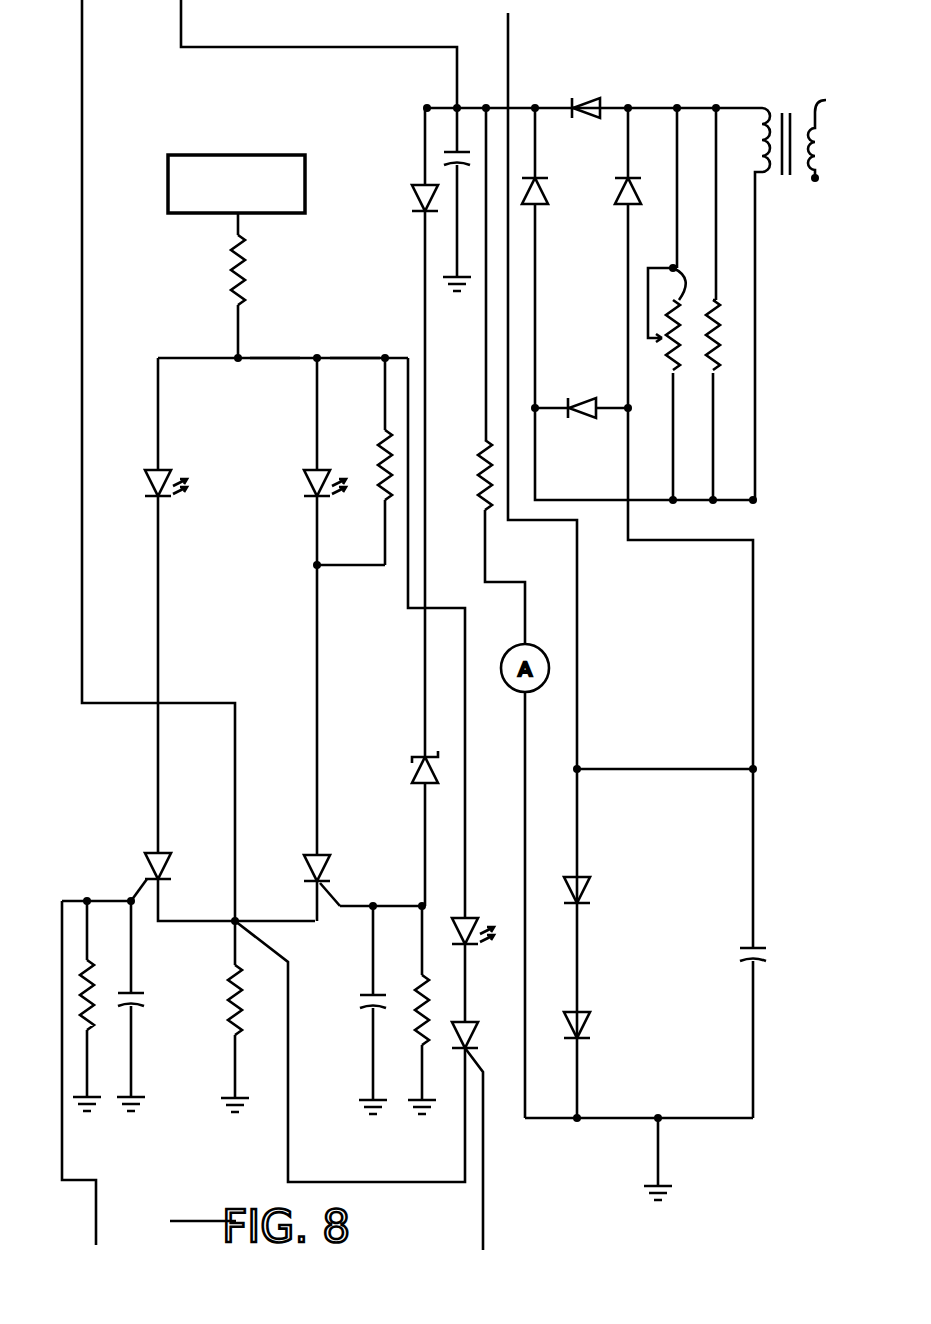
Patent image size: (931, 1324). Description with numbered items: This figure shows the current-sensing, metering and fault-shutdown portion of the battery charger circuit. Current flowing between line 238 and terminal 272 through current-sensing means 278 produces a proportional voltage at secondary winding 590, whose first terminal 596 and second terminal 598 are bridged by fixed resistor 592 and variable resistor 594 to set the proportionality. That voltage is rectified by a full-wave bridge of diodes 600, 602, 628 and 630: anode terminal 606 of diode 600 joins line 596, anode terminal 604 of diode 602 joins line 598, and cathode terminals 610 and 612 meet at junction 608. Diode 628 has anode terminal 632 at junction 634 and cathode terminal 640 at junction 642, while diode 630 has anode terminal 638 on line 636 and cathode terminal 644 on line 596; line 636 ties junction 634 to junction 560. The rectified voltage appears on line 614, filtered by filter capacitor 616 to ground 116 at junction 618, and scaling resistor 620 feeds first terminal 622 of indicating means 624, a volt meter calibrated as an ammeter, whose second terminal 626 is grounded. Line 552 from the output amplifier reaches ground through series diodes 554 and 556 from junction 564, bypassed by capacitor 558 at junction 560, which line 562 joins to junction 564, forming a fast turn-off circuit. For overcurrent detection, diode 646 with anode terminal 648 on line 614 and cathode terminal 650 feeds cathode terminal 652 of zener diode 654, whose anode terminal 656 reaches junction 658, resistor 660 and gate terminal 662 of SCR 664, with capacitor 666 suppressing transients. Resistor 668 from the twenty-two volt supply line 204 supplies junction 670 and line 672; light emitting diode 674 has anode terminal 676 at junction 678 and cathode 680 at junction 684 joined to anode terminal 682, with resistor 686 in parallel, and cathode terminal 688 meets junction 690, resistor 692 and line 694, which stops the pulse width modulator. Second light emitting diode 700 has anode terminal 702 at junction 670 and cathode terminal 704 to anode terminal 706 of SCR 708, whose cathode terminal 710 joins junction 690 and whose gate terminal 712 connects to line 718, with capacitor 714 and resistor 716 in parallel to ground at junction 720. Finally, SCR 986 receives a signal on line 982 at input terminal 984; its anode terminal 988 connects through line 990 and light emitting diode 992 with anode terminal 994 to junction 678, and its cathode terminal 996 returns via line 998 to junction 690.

The line 694 is at (84, 126).
The line 614 is at (256, 46).
The 22 volt line 204 is at (296, 155).
The resistor 668 is at (226, 270).
The junction 670 is at (236, 356).
The line 672 is at (270, 356).
The junction 678 is at (330, 356).
The anode terminal 702 is at (160, 412).
The second light emitting diode 700 is at (162, 468).
The cathode terminal 704 is at (160, 590).
The anode terminal 706 is at (160, 816).
The SCR 708 is at (150, 868).
The cathode terminal 710 is at (170, 920).
The anode terminal 676 is at (320, 416).
The light emitting diode 674 is at (305, 482).
The cathode 680 is at (315, 534).
The junction 684 is at (316, 566).
The resistor 686 is at (383, 466).
The anode terminal 682 is at (313, 760).
The junction 690 is at (238, 920).
The cathode terminal 688 is at (317, 922).
The junction 618 is at (455, 104).
The filter capacitor 616 is at (426, 148).
The diode 646 is at (412, 200).
The cathode terminal 650 is at (424, 258).
The cathode terminal 652 is at (424, 668).
The zener diode 654 is at (415, 772).
The anode terminal 656 is at (424, 806).
The SCR 664 is at (330, 862).
The gate terminal 662 is at (350, 905).
The anode terminal 648 is at (424, 154).
The ground 116 is at (457, 293).
The line 552 is at (511, 50).
The junction 608 is at (536, 106).
The diode 600 is at (608, 104).
The cathode terminal 610 is at (593, 100).
The anode terminal 606 is at (629, 106).
The first terminal 596 is at (695, 106).
The secondary winding 590 is at (809, 254).
The current-sensing means 278 is at (797, 95).
The line 238 is at (818, 112).
The terminal 272 is at (815, 180).
The cathode terminal 612 is at (536, 160).
The diode 602 is at (546, 196).
The anode terminal 604 is at (536, 290).
The cathode terminal 644 is at (630, 160).
The diode 630 is at (624, 196).
The anode terminal 638 is at (620, 275).
The junction 642 is at (536, 406).
The cathode terminal 640 is at (572, 415).
The diode 628 is at (597, 394).
The anode terminal 632 is at (608, 418).
The junction 634 is at (628, 410).
The line 636 is at (752, 612).
The second terminal 598 is at (740, 502).
The variable resistor 594 is at (671, 266).
The fixed resistor 592 is at (727, 338).
The scaling resistor 620 is at (495, 512).
The first terminal 622 is at (527, 624).
The indicating means 624 is at (530, 694).
The second terminal 626 is at (525, 820).
The junction 564 is at (578, 768).
The line 562 is at (686, 768).
The junction 560 is at (752, 790).
The capacitor 558 is at (751, 945).
The diode 554 is at (586, 888).
The diode 556 is at (586, 1026).
The line 990 is at (466, 778).
The anode terminal 994 is at (466, 900).
The light emitting diode 992 is at (466, 920).
The anode terminal 988 is at (466, 990).
The SCR 986 is at (466, 1016).
The input terminal 984 is at (466, 1046).
The line 982 is at (485, 1200).
The line 998 is at (315, 1180).
The capacitor 666 is at (370, 996).
The junction 658 is at (413, 917).
The resistor 660 is at (421, 1030).
The cathode terminal 996 is at (428, 1092).
The junction 720 is at (88, 900).
The line 718 is at (112, 898).
The gate terminal 712 is at (135, 898).
The resistor 716 is at (90, 975).
The capacitor 714 is at (135, 990).
The resistor 692 is at (230, 1018).